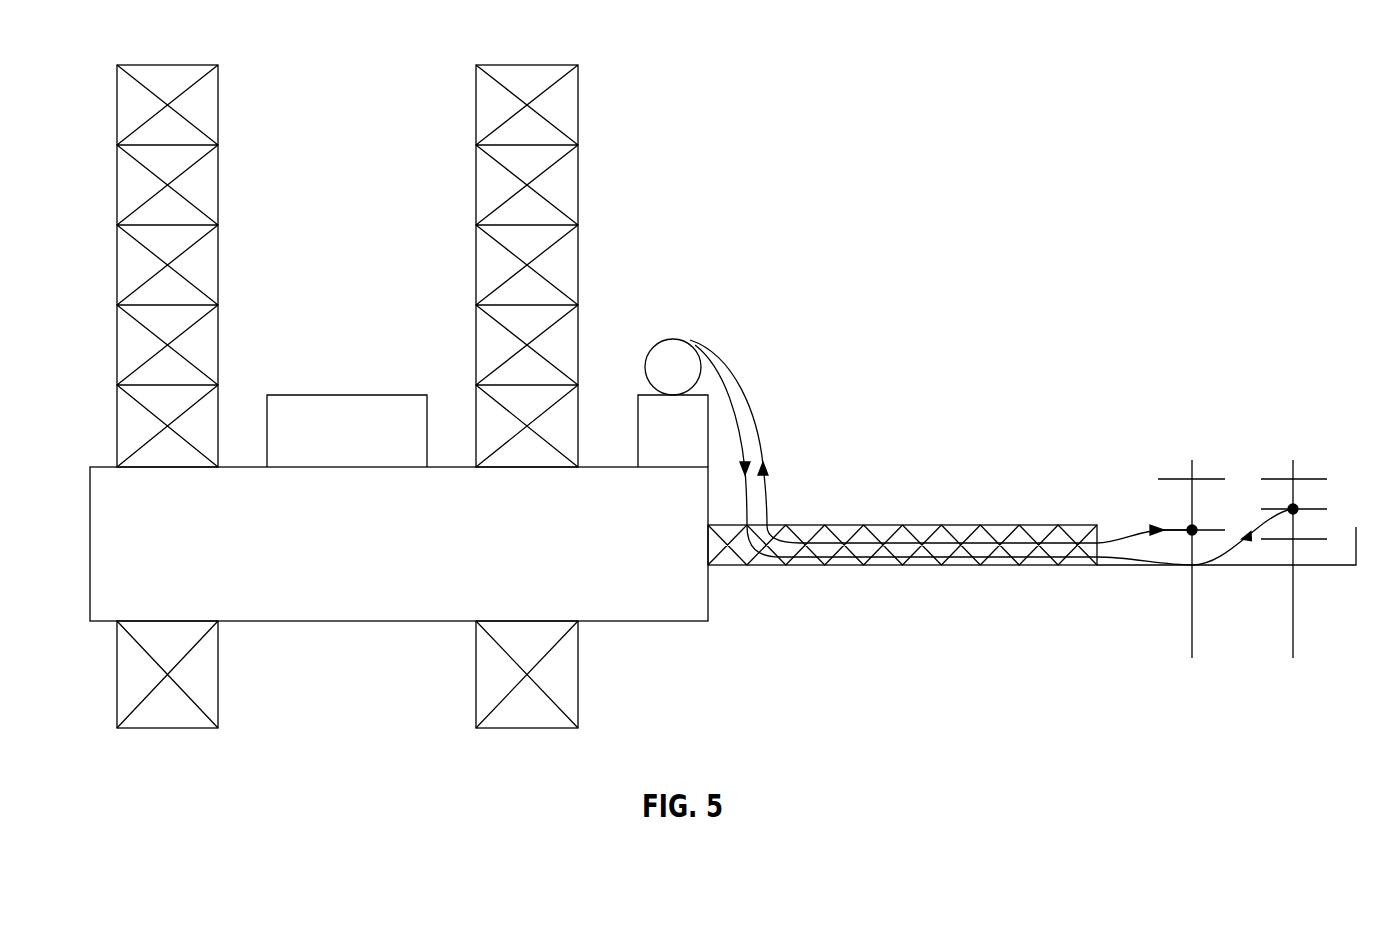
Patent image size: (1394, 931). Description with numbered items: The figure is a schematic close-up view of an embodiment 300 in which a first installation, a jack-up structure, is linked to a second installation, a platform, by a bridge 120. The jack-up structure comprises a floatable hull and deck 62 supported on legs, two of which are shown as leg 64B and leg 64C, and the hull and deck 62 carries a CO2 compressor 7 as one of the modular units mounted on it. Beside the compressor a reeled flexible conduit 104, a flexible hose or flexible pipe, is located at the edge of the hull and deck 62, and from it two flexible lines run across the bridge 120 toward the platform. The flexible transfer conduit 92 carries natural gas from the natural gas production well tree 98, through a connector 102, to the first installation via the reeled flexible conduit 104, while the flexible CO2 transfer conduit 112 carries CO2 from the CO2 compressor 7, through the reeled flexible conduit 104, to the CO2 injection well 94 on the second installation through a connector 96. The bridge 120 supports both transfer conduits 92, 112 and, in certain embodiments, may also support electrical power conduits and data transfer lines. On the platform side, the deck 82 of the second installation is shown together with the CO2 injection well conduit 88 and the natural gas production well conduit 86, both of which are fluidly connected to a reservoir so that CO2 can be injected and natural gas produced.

The embodiment 300 is at (1222, 87).
The floatable hull and deck 62 is at (90, 542).
The leg 64B is at (218, 108).
The leg 64C is at (578, 108).
The CO2 compressor 7 is at (348, 393).
The reeled flexible conduit 104 is at (672, 351).
The flexible CO2 transfer conduit 112 is at (727, 378).
The flexible transfer conduit 92 is at (757, 437).
The bridge 120 is at (878, 525).
The deck 82 is at (1322, 565).
The CO2 injection well conduit 88 is at (1192, 600).
The natural gas production well conduit 86 is at (1293, 600).
The CO2 injection well 94 is at (1192, 462).
The connector 96 is at (1190, 527).
The natural gas production well tree 98 is at (1293, 462).
The connector 102 is at (1293, 509).